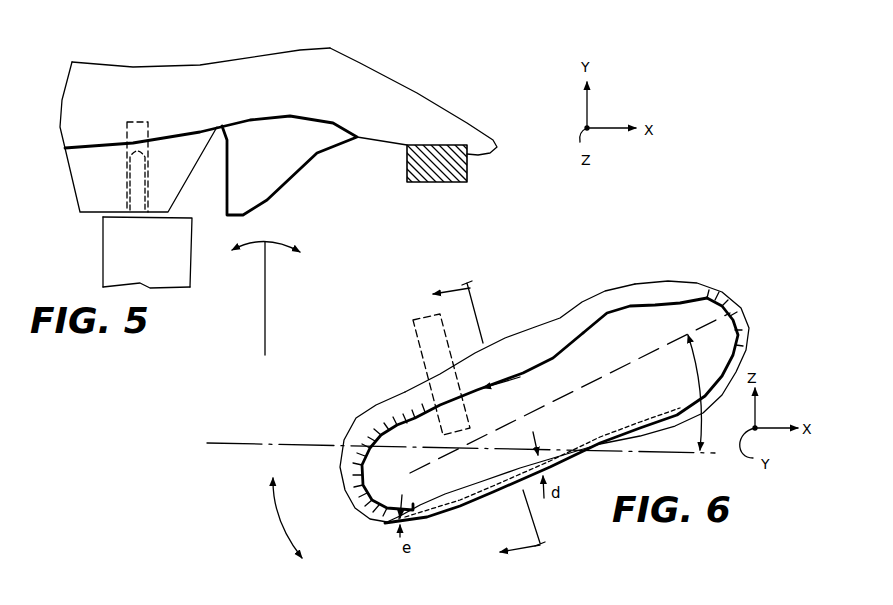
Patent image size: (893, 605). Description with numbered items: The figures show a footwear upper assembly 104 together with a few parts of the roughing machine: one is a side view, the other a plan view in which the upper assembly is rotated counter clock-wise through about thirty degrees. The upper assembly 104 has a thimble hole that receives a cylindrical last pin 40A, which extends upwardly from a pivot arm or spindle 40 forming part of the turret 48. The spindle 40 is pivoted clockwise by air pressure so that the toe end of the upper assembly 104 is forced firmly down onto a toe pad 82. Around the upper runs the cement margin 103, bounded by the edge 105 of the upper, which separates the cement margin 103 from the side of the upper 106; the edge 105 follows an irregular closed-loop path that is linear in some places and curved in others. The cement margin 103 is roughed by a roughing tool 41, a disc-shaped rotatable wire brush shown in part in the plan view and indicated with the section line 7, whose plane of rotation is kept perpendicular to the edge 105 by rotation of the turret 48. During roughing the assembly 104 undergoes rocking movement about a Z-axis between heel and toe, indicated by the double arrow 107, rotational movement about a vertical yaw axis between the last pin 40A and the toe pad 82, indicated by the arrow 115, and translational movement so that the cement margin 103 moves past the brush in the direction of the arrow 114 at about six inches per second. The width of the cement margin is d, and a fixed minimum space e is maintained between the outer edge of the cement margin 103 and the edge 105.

In FIG. 5, the pivot arm or spindle 40 is at (108, 225).
In FIG. 5, the cylindrical last pin 40A is at (123, 182).
In FIG. 6, the roughing tool 41 is at (420, 350).
In FIG. 5, the turret 48 is at (182, 275).
In FIG. 5, the toe pad 82 is at (442, 182).
In FIG. 5, the cement margin 103 is at (422, 92).
In FIG. 6, the cement margin 103 is at (663, 292).
In FIG. 5, the footwear upper assembly 104 is at (343, 45).
In FIG. 6, the footwear upper assembly 104 is at (743, 283).
In FIG. 5, the edge of the upper 105 is at (135, 63).
In FIG. 6, the edge of the upper 105 is at (515, 367).
In FIG. 6, the side of the upper 106 is at (553, 320).
In FIG. 5, the double arrow indicating rocking movement 107 is at (282, 240).
In FIG. 6, the arrow indicating direction of cement margin path 114 is at (507, 385).
In FIG. 6, the arrow indicating rotational movement 115 is at (280, 520).
In FIG. 6, the section line 7- 7 is at (483, 427).